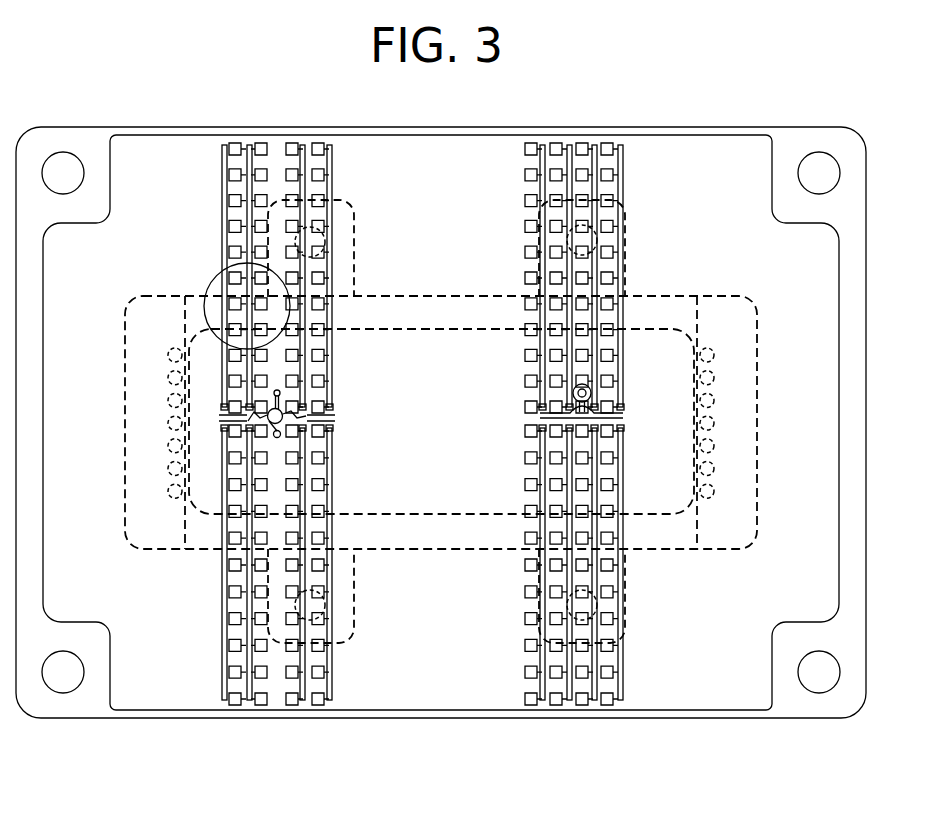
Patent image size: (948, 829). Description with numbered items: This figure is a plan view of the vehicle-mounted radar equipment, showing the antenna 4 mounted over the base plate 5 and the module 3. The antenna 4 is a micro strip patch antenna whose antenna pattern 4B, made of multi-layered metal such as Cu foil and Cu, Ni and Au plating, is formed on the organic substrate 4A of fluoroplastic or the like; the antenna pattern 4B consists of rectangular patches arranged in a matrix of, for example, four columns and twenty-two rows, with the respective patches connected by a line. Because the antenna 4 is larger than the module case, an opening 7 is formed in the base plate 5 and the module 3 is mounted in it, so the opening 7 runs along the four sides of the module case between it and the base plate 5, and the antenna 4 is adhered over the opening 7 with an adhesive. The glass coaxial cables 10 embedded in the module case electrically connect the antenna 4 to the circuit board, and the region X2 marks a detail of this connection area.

The module 3 is at (673, 503).
The antenna 4 is at (533, 775).
The organic substrate 4A is at (437, 694).
The antenna pattern 4B is at (320, 706).
The base plate 5 is at (850, 636).
The opening 7 is at (668, 300).
The glass coaxial cable 10 is at (572, 393).
The enlarged detail region X2 is at (214, 280).